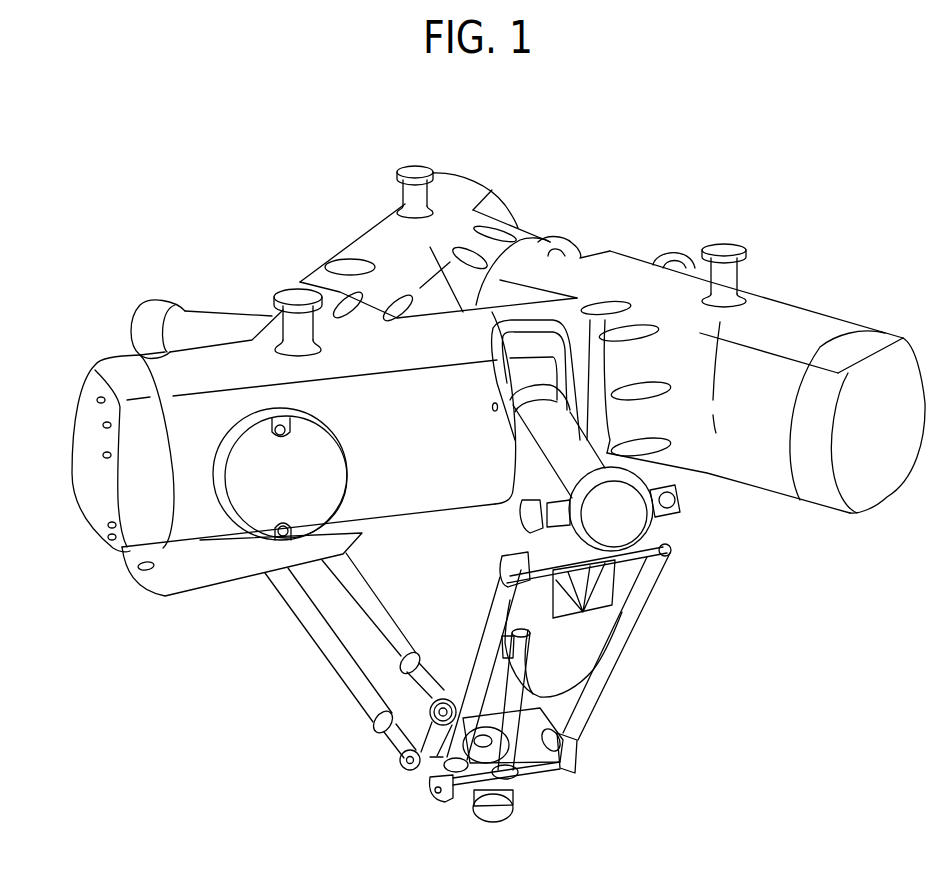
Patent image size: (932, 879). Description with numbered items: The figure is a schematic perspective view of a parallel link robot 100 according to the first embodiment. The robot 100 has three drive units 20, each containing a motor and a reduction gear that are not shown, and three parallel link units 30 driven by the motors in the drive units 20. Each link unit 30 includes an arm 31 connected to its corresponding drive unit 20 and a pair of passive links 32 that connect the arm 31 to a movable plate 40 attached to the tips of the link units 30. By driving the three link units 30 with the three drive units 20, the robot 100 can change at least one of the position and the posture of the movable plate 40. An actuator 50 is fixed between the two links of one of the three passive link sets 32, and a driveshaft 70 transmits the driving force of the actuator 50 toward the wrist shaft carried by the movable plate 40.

The robot 100 is at (852, 152).
The drive unit 20 is at (367, 232).
The link unit 30 is at (755, 530).
The arm 31 is at (215, 327).
The passive links 32 is at (307, 618).
The movable plate 40 is at (540, 760).
The actuator 50 is at (578, 643).
The driveshaft 70 is at (537, 710).